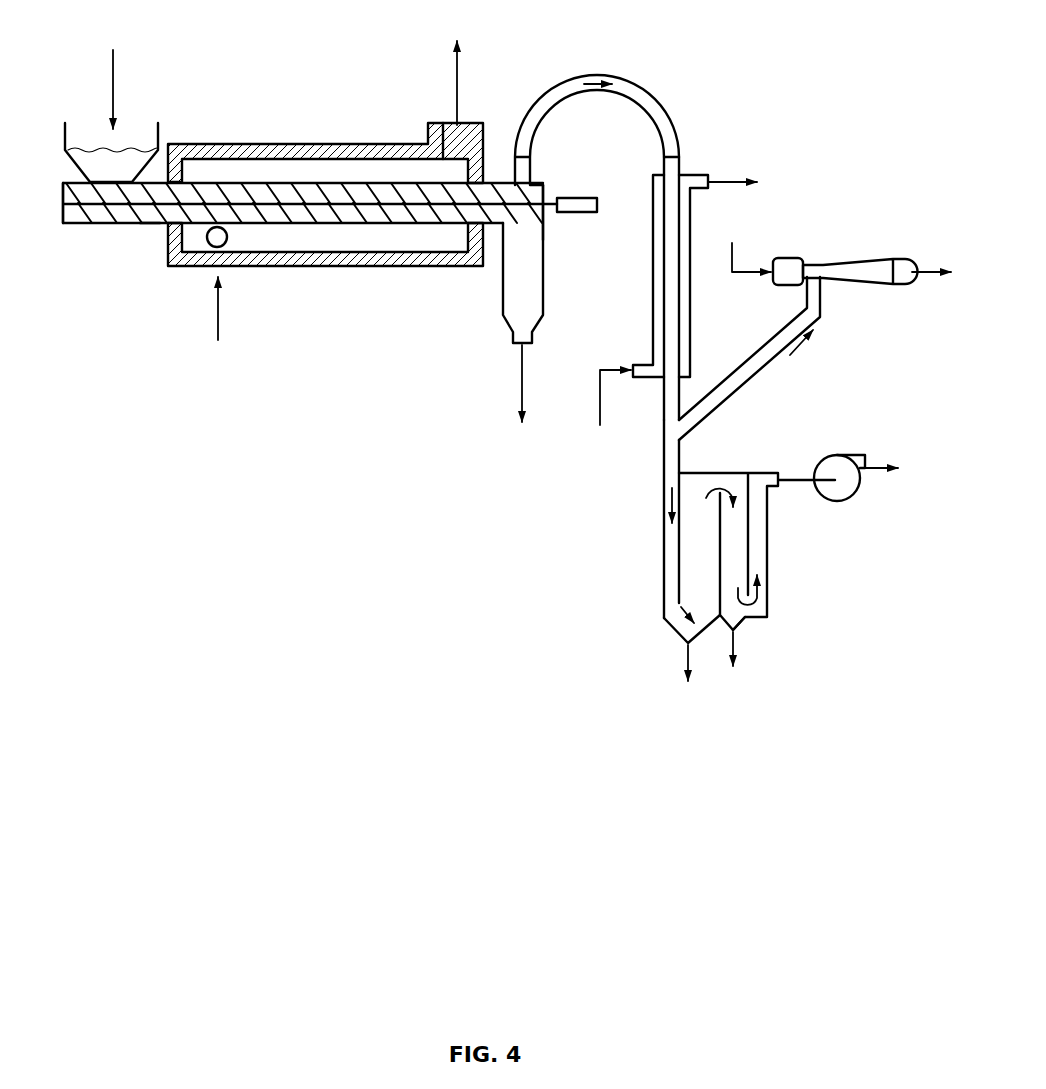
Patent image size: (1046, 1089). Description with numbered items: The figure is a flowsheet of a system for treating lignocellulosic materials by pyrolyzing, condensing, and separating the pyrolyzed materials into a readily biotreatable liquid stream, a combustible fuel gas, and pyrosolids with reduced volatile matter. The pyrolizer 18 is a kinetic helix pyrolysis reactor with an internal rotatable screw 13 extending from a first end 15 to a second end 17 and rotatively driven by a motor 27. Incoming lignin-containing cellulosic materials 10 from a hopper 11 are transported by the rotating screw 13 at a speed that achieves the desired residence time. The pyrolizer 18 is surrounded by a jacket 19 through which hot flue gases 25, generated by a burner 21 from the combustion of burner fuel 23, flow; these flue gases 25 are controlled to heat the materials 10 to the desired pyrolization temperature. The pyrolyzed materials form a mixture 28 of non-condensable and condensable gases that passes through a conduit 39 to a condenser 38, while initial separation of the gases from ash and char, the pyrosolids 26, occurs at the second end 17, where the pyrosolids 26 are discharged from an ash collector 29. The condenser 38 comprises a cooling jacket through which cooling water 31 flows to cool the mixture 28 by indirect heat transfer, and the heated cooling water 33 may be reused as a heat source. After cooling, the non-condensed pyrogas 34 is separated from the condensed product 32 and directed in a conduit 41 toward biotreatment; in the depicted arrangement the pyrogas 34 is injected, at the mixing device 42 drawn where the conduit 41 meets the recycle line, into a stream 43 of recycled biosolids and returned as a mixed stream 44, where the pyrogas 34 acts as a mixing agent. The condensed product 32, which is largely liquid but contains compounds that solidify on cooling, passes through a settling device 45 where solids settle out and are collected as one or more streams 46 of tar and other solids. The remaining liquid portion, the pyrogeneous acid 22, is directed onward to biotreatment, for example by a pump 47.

The lignin-containing cellulosic materials 10 is at (113, 85).
The hopper 11 is at (160, 131).
The rotatable screw 13 is at (245, 190).
The first end 15 is at (70, 227).
The second end 17 is at (543, 225).
The pyrolizer 18 is at (150, 223).
The jacket 19 is at (343, 266).
The burner 21 is at (203, 249).
The pyrogeneous acid 22 is at (870, 464).
The burner fuel 23 is at (218, 313).
The hot flue gases 25 is at (455, 75).
The pyrosolids 26 is at (522, 378).
The motor 27 is at (580, 198).
The mixture 28 is at (633, 93).
The ash collector 29 is at (503, 296).
The cooling water 31 is at (600, 398).
The condensed product 32 is at (664, 507).
The heated cooling water 33 is at (733, 178).
The pyrogas 34 is at (775, 346).
The condenser 38 is at (652, 303).
The conduit 39 is at (555, 84).
The conduit 41 is at (744, 370).
The ejector 42 is at (868, 260).
The stream of recycled biosolids 43 is at (734, 250).
The mixed stream 44 is at (930, 276).
The settling device 45 is at (768, 572).
The streams of tar and other solids 46 is at (735, 648).
The pump 47 is at (840, 480).